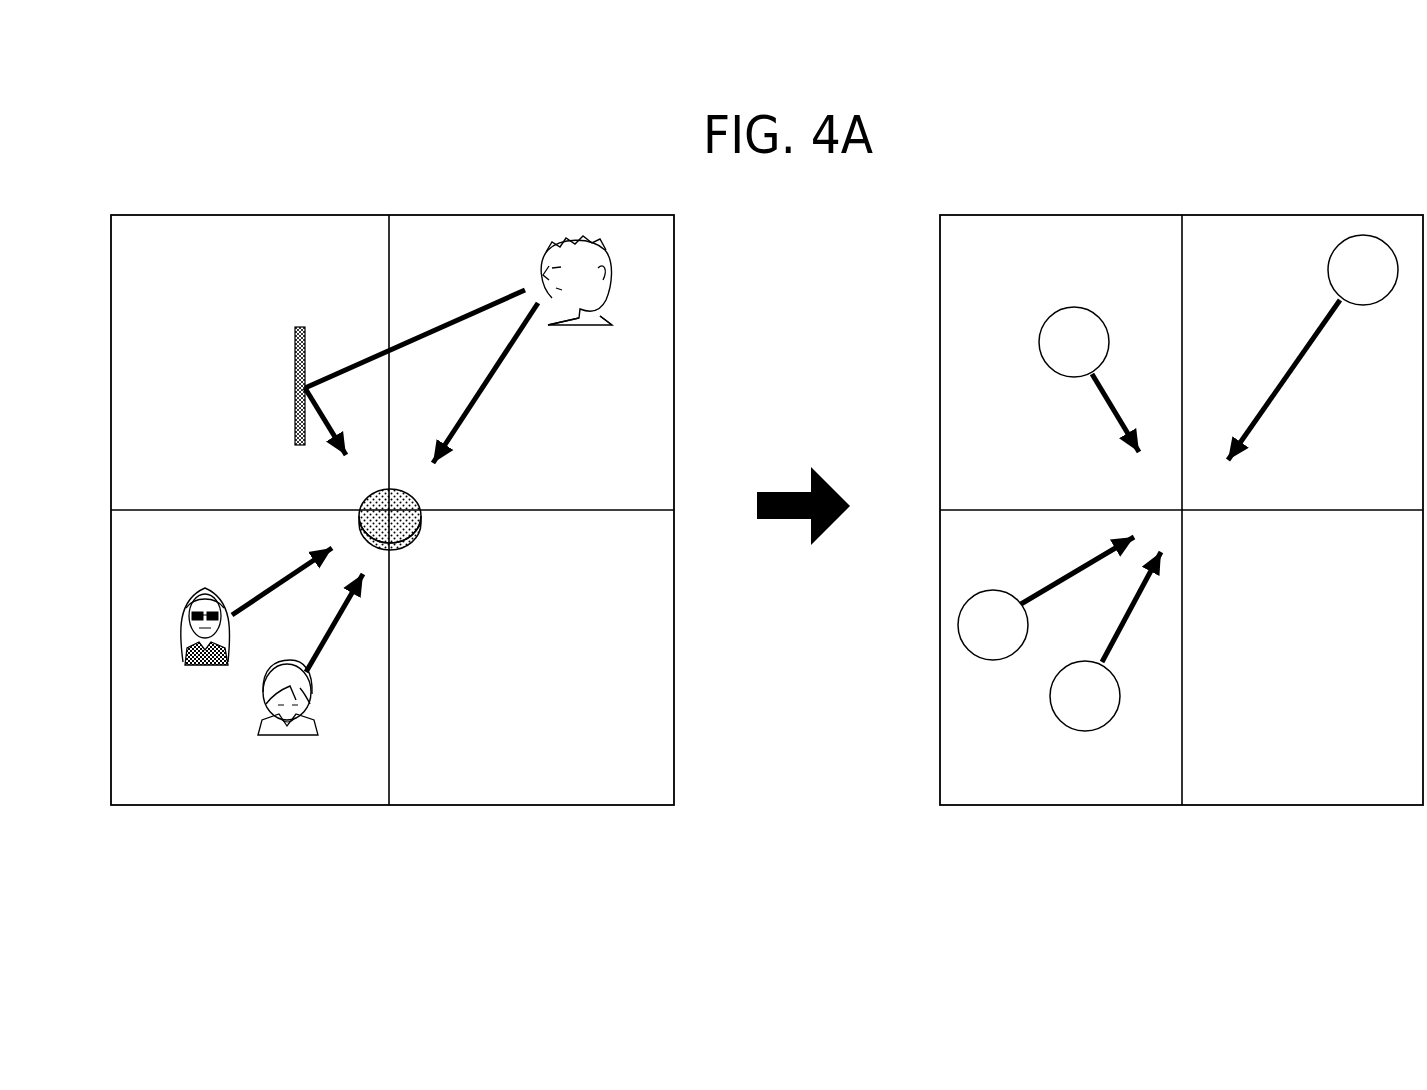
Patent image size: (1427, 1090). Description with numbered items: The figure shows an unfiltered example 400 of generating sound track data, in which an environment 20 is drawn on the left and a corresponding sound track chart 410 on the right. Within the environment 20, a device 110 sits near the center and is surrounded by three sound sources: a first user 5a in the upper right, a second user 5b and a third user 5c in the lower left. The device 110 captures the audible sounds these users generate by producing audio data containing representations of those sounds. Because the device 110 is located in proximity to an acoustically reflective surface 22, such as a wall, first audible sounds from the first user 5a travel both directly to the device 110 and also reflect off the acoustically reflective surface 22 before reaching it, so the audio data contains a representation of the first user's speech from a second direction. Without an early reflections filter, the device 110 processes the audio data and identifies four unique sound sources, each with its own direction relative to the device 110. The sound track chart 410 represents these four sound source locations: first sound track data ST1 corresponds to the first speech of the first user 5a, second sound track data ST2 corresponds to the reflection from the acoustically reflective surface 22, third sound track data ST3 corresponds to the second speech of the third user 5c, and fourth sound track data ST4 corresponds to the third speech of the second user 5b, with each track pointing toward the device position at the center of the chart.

The environment 20 is at (392, 540).
The acoustically reflective surface 22 is at (297, 352).
The first user 5a is at (572, 326).
The second user 5b is at (285, 735).
The third user 5c is at (205, 666).
The device 110 is at (414, 540).
The unfiltered example 400 is at (1286, 152).
The sound track chart 410 is at (1181, 541).
The first sound track data ST1 is at (1313, 347).
The second sound track data ST2 is at (1089, 379).
The third sound track data ST3 is at (1046, 598).
The fourth sound track data ST4 is at (1105, 641).